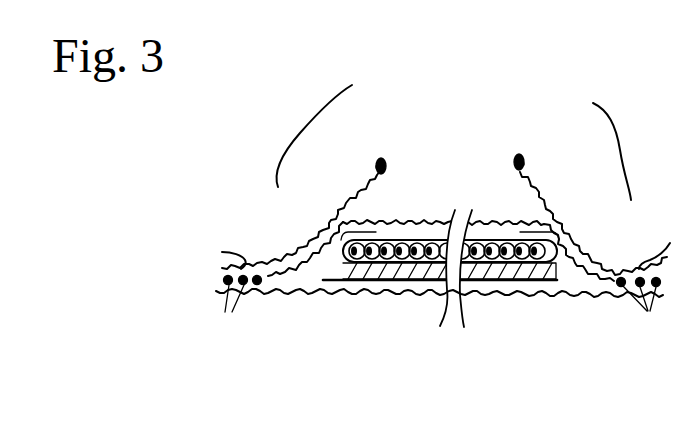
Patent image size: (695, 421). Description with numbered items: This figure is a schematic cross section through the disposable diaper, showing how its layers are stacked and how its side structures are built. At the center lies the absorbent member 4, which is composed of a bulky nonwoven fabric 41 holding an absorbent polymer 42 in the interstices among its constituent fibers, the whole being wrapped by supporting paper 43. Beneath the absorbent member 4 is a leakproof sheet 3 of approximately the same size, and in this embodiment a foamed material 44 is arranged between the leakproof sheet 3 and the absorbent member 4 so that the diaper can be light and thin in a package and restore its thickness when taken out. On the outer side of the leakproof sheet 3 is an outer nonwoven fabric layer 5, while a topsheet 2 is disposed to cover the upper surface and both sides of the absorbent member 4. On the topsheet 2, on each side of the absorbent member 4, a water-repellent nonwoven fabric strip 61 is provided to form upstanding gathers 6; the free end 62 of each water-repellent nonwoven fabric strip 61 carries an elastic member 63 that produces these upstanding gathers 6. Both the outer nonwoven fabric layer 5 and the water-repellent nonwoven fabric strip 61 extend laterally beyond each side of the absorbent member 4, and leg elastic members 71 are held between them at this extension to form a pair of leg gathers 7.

The topsheet 2 is at (433, 220).
The leakproof sheet 3 is at (343, 262).
The absorbent member 4 is at (441, 323).
The bulky nonwoven fabric 41 is at (392, 272).
The absorbent polymer 42 is at (427, 282).
The supporting paper 43 is at (480, 268).
The foamed material 44 is at (373, 356).
The outer nonwoven fabric layer 5 is at (267, 294).
The upstanding gathers 6 is at (458, 142).
The water-repellent nonwoven fabric strip 61 is at (343, 194).
The free end 62 is at (384, 158).
The elastic member 63 is at (378, 163).
The leg gathers 7 is at (222, 246).
The leg elastic members 71 is at (442, 310).